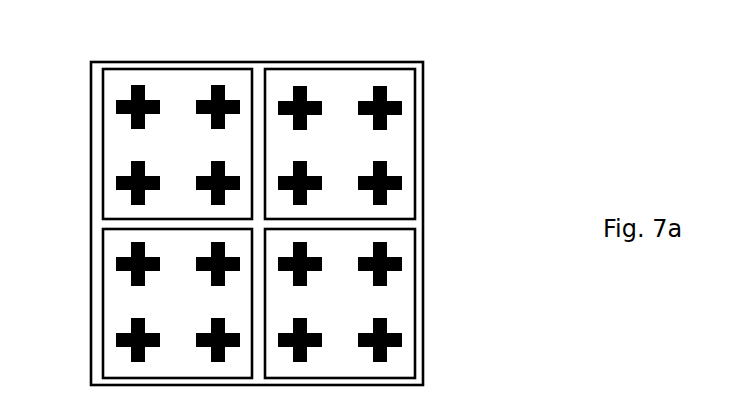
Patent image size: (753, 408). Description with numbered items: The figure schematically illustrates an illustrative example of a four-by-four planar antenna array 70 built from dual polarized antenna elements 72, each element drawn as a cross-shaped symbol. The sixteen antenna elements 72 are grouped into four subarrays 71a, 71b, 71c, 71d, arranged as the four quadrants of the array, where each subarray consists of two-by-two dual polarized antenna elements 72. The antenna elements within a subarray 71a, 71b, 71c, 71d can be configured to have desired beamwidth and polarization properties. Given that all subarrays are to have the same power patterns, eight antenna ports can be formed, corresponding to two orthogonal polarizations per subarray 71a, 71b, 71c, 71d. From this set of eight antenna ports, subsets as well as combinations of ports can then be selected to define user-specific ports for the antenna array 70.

The planar antenna array 70 is at (131, 62).
The subarray 71a is at (102, 142).
The subarray 71b is at (102, 317).
The subarray 71c is at (386, 144).
The subarray 71d is at (423, 317).
The dual polarized antenna element 72 is at (402, 113).